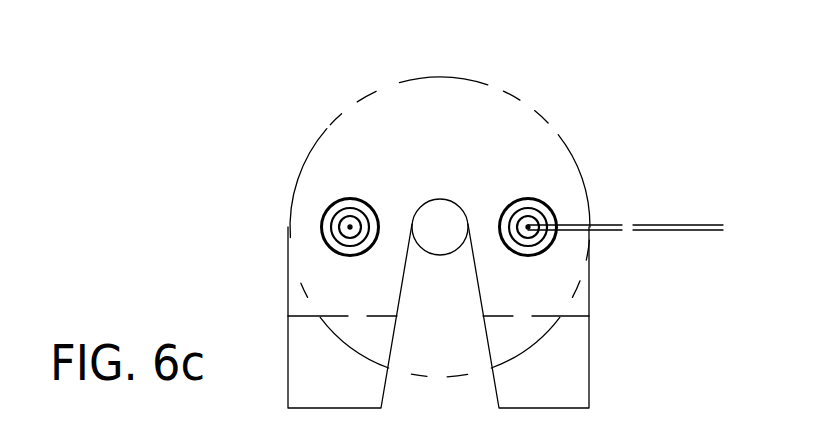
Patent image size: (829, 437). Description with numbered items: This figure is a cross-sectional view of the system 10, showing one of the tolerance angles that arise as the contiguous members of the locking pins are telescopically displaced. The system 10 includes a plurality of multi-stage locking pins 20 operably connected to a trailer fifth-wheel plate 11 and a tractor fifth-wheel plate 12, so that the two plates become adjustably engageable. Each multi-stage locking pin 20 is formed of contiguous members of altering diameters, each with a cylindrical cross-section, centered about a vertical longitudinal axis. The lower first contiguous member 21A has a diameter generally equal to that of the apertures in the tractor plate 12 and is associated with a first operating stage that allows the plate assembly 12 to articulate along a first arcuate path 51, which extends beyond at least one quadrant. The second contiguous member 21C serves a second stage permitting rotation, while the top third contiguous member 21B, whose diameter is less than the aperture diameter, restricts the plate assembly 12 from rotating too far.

The system 10 is at (176, 107).
The trailer fifth-wheel plate 11 is at (398, 78).
The tractor fifth-wheel plate 12 is at (590, 382).
The multi-stage locking pin 20 is at (329, 248).
The first contiguous member 21A is at (368, 205).
The third contiguous member 21B is at (350, 227).
The second contiguous member 21C is at (351, 199).
The first arcuate path 51 is at (678, 292).